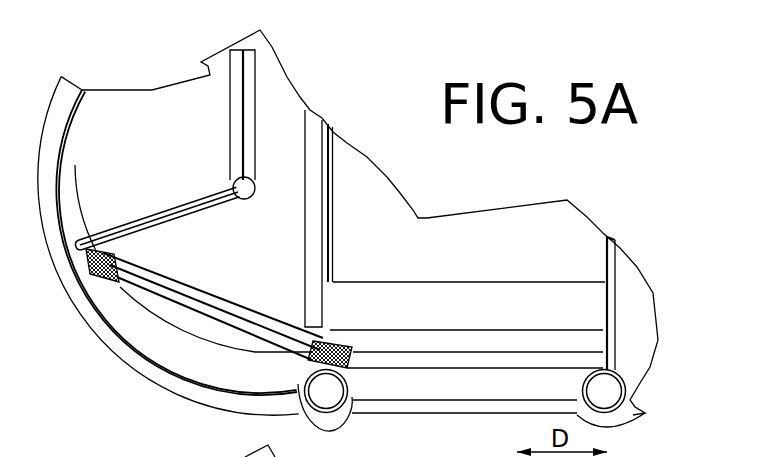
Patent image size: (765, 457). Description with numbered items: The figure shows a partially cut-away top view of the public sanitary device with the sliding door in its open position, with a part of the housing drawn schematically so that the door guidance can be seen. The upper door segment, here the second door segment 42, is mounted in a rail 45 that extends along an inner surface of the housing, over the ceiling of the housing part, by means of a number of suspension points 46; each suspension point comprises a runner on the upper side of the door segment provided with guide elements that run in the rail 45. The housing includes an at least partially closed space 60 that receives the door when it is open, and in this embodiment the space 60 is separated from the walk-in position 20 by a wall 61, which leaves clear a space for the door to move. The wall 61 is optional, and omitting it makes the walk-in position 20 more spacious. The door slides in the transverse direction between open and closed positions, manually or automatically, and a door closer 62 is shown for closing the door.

The walk-in position 20 is at (578, 252).
The second door segment 42 is at (218, 308).
The rail 45 is at (155, 322).
The suspension points 46 is at (97, 256).
The at least partially closed space 60 is at (112, 120).
The wall 61 is at (313, 132).
The door closer 62 is at (236, 131).